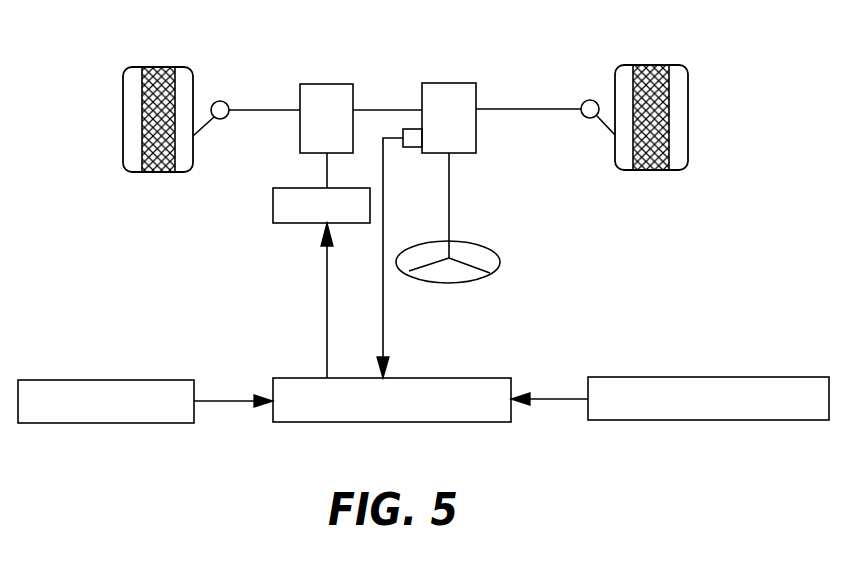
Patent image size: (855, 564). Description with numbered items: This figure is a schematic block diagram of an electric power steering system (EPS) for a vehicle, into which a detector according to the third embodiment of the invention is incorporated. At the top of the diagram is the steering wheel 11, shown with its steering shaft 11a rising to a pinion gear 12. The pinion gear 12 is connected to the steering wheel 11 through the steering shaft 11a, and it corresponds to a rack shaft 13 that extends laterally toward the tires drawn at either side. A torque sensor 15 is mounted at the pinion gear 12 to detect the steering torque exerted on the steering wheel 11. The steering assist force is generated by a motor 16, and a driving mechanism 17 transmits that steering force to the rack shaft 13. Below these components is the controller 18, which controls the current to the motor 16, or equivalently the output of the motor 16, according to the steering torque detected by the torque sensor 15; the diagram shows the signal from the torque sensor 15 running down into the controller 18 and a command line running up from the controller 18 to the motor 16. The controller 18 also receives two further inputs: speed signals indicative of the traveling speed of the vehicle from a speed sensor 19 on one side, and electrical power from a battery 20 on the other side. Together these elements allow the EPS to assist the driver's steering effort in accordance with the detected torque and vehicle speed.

The steering wheel 11 is at (498, 252).
The steering shaft 11a is at (449, 196).
The pinion gear 12 is at (447, 83).
The rack shaft 13 is at (528, 109).
The torque sensor 15 is at (414, 147).
The motor 16 is at (273, 202).
The driving mechanism 17 is at (325, 84).
The controller 18 is at (470, 378).
The speed sensor 19 is at (745, 377).
The battery 20 is at (100, 380).